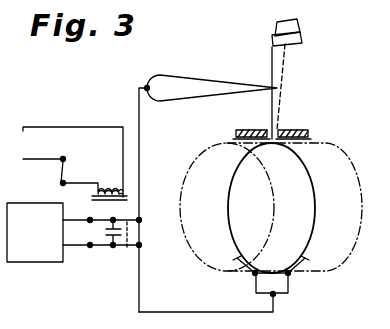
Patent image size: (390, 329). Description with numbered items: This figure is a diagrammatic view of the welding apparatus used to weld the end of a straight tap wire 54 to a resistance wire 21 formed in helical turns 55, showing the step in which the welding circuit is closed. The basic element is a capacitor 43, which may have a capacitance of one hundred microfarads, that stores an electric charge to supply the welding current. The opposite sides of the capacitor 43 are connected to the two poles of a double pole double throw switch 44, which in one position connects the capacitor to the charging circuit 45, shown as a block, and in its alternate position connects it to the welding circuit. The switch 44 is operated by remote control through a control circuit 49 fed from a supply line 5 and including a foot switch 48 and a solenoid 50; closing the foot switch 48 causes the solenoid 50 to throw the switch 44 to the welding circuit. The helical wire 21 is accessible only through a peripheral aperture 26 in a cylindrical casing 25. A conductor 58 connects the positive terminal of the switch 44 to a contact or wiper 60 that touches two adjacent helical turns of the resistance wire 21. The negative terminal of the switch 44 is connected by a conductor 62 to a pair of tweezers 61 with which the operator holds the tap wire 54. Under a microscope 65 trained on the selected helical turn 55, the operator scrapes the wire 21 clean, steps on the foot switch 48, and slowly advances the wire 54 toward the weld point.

The supply line 5 is at (40, 149).
The resistance wire 21 is at (314, 181).
The cylindrical casing 25 is at (305, 129).
The peripheral aperture 26 is at (262, 129).
The capacitor 43 is at (110, 248).
The double pole double throw switch 44 is at (126, 250).
The charging circuit 45 is at (31, 263).
The foot switch 48 is at (61, 171).
The control circuit 49 is at (68, 116).
The solenoid 50 is at (111, 187).
The straight tap wire 54 is at (272, 60).
The helical turns 55 is at (185, 165).
The conductor 58 is at (207, 304).
The contact or wiper 60 is at (289, 284).
The tweezers 61 is at (178, 76).
The conductor 62 is at (139, 104).
The microscope 65 is at (301, 34).